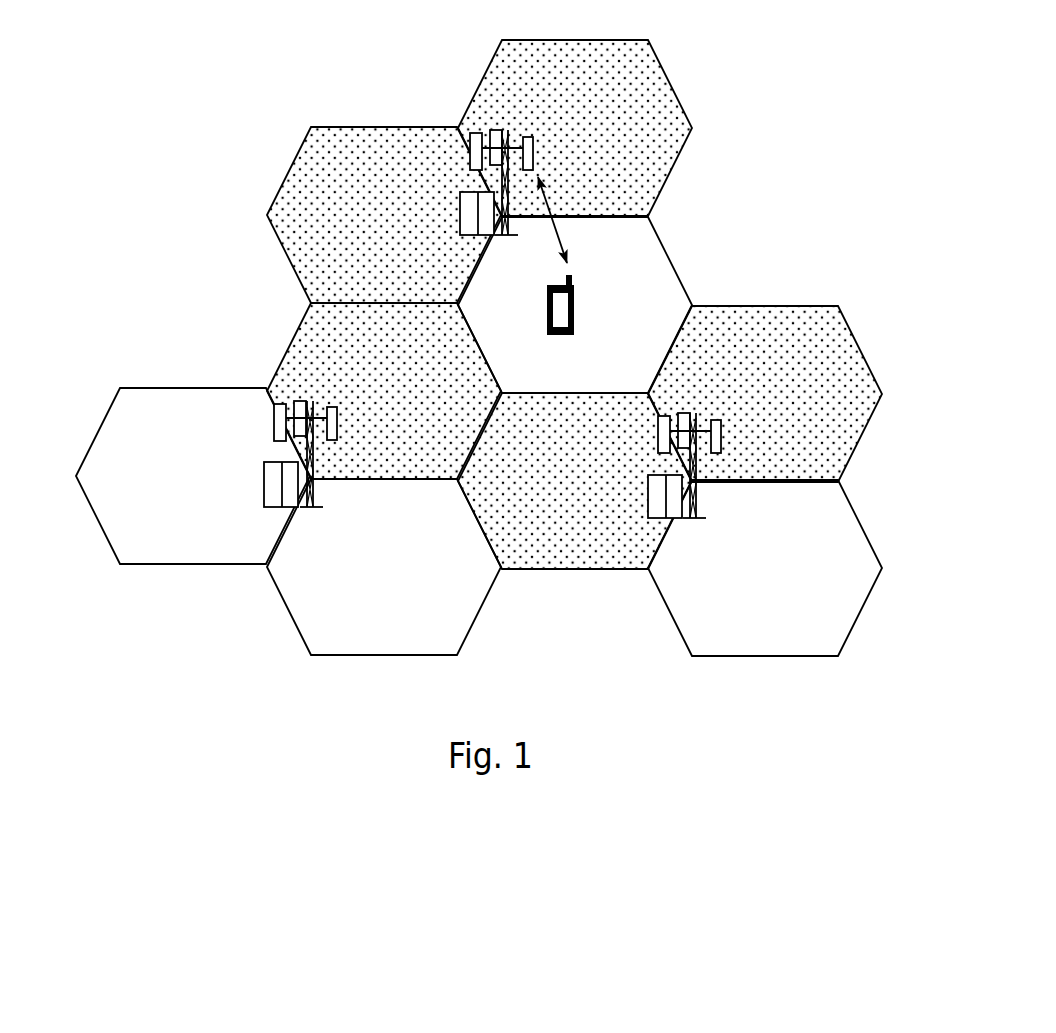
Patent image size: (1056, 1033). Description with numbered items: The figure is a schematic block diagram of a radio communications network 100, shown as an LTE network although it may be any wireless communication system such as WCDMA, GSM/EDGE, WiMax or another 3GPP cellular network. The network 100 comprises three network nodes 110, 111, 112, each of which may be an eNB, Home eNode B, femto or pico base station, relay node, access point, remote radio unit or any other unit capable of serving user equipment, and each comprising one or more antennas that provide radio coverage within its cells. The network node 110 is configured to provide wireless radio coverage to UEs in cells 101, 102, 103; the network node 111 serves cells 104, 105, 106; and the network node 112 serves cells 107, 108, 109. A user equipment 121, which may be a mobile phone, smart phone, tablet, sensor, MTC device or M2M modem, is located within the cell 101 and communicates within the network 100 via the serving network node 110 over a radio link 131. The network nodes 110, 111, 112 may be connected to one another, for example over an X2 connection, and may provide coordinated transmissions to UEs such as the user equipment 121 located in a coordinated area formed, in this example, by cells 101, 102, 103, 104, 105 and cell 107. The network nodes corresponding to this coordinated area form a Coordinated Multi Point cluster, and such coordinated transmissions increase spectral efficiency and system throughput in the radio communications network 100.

The radio communications network 100 is at (552, 382).
The cell 101 is at (647, 248).
The cell 102 is at (360, 158).
The cell 103 is at (550, 74).
The cell 104 is at (739, 340).
The cell 105 is at (597, 422).
The cell 106 is at (740, 652).
The cell 107 is at (360, 334).
The cell 108 is at (167, 417).
The cell 109 is at (360, 649).
The network node 110 is at (460, 218).
The network node 111 is at (695, 518).
The network node 112 is at (263, 485).
The user equipment 121 is at (575, 315).
The radio link 131 is at (548, 200).